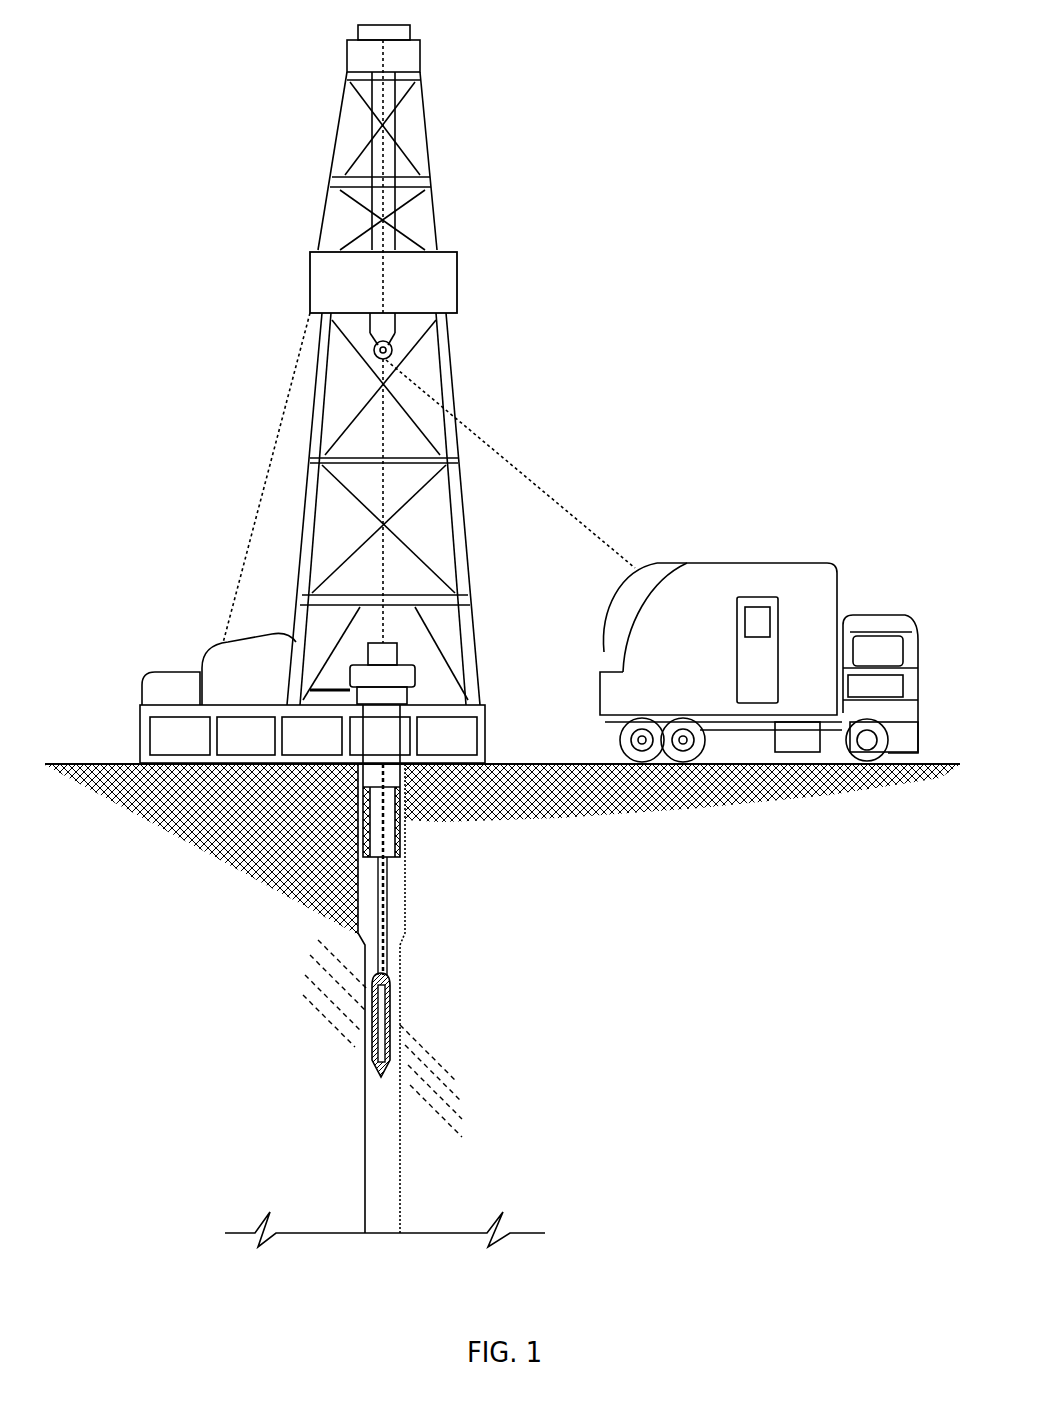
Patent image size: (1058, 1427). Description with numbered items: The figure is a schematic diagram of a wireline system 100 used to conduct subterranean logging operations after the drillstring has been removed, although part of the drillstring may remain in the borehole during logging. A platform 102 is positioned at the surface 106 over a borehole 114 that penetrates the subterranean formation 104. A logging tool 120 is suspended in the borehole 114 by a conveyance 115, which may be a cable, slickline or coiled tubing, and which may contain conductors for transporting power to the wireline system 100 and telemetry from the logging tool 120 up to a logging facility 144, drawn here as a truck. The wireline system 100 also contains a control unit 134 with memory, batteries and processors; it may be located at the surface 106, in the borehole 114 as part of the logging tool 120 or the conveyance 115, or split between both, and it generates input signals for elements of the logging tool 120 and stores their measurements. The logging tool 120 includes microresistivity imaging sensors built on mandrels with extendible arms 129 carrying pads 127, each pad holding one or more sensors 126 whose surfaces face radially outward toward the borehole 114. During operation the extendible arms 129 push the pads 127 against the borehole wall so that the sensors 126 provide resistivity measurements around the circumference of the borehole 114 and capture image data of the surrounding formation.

The wireline system 100 is at (636, 294).
The platform 102 is at (340, 290).
The subterranean formation 104 is at (687, 929).
The surface 106 is at (96, 765).
The borehole 114 is at (367, 1207).
The conveyance 115 is at (400, 843).
The logging tool 120 is at (402, 1005).
The sensors 126 is at (372, 1025).
The pads 127 is at (398, 1028).
The extendible arms 129 is at (395, 1052).
The control unit 134 is at (414, 648).
The logging facility 144 is at (750, 560).